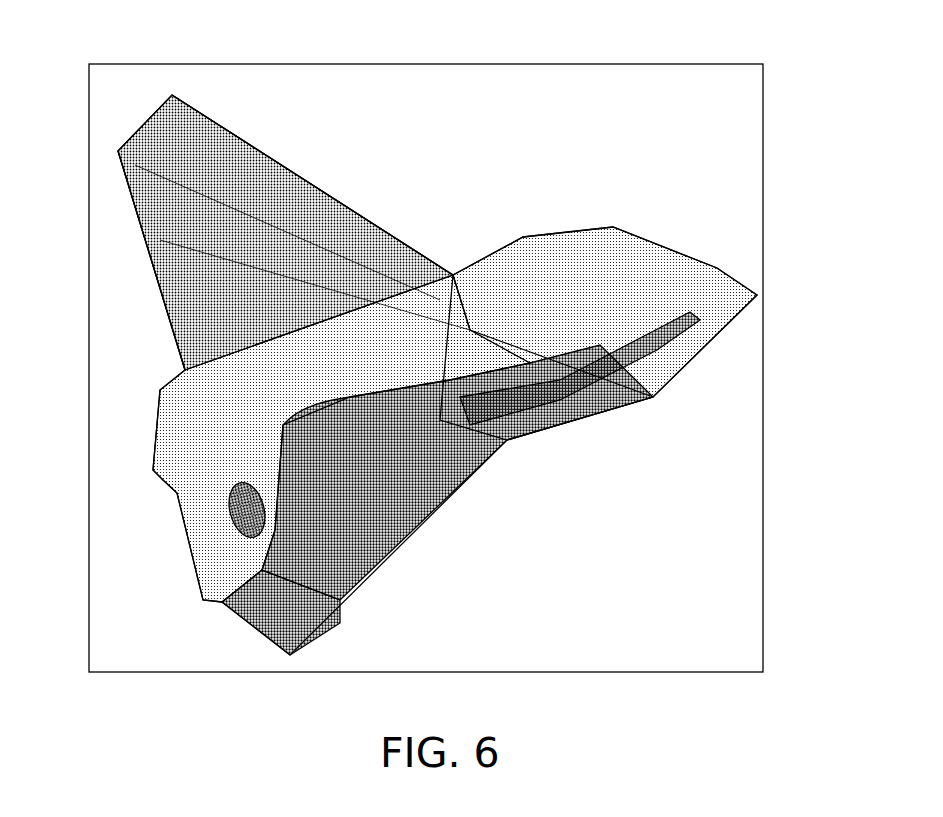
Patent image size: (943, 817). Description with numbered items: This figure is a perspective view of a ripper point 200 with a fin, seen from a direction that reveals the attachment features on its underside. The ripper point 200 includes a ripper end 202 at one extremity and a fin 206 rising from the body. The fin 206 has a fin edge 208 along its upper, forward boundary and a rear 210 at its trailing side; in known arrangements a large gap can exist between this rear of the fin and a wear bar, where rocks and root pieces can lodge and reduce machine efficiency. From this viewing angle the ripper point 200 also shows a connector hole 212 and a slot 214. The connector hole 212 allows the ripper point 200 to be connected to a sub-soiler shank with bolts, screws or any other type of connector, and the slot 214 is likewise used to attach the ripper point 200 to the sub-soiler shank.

The ripper point 200 is at (490, 168).
The ripper end 202 is at (723, 270).
The fin 206 is at (377, 173).
The fin edge 208 is at (256, 147).
The rear 210 is at (160, 277).
The connector hole 212 is at (232, 535).
The slot 214 is at (560, 392).